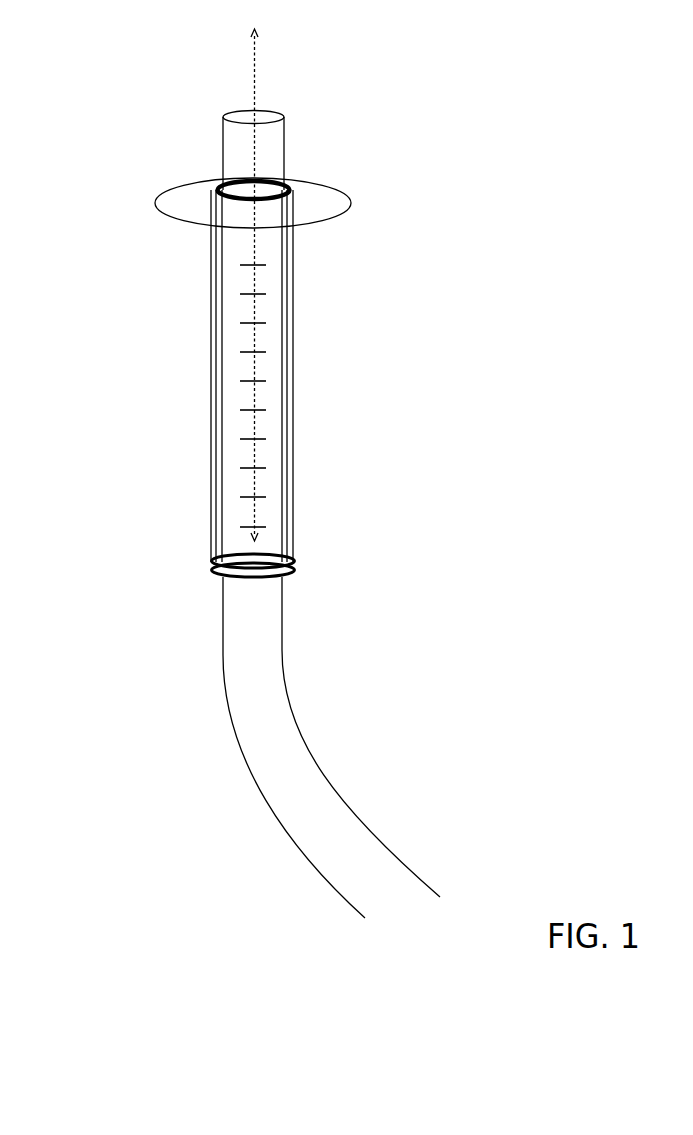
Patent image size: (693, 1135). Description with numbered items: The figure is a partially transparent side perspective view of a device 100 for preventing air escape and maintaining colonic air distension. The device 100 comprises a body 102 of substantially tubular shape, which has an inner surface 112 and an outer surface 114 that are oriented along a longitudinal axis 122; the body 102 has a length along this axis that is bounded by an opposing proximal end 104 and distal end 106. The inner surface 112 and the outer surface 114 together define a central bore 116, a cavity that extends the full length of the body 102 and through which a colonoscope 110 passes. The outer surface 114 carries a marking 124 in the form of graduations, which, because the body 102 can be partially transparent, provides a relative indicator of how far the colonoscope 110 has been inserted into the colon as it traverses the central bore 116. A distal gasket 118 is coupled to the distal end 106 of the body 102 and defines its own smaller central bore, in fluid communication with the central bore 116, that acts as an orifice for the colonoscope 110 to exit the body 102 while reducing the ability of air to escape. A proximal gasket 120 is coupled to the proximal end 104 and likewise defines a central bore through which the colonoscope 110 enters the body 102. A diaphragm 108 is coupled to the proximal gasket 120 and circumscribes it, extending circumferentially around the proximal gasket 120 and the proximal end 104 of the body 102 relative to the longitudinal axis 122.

The device 100 is at (594, 98).
The body 102 is at (297, 460).
The proximal end 104 is at (312, 155).
The distal end 106 is at (297, 585).
The diaphragm 108 is at (340, 183).
The colonoscope 110 is at (393, 858).
The inner surface 112 is at (222, 430).
The outer surface 114 is at (208, 478).
The central bore 116 is at (272, 367).
The distal gasket 118 is at (297, 567).
The proximal gasket 120 is at (217, 152).
The longitudinal axis 122 is at (247, 92).
The marking 124 is at (259, 288).